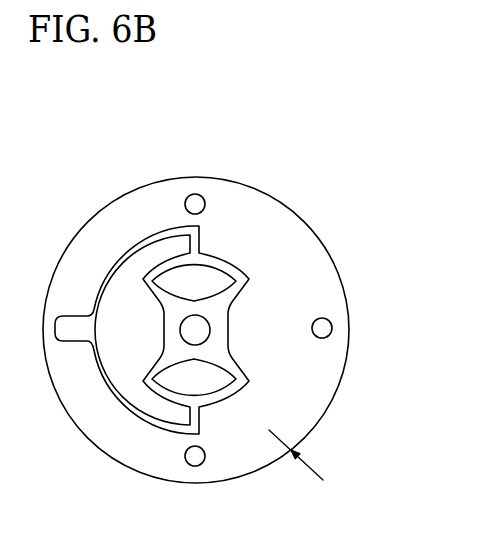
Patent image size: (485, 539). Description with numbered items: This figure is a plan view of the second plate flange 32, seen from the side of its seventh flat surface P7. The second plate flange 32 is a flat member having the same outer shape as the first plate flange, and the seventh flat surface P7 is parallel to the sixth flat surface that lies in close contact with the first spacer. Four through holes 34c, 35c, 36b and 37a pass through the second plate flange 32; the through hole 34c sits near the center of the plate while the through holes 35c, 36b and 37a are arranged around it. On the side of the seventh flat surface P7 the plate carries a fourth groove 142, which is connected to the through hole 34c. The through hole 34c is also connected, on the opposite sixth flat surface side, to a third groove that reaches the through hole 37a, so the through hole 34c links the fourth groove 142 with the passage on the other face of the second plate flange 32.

The second plate flange 32 is at (83, 173).
The through hole 35c is at (205, 194).
The through hole 36b is at (185, 459).
The through hole 37a is at (322, 328).
The through hole 34c is at (195, 330).
The fourth groove 142 is at (249, 281).
The seventh flat surface P7 is at (308, 471).